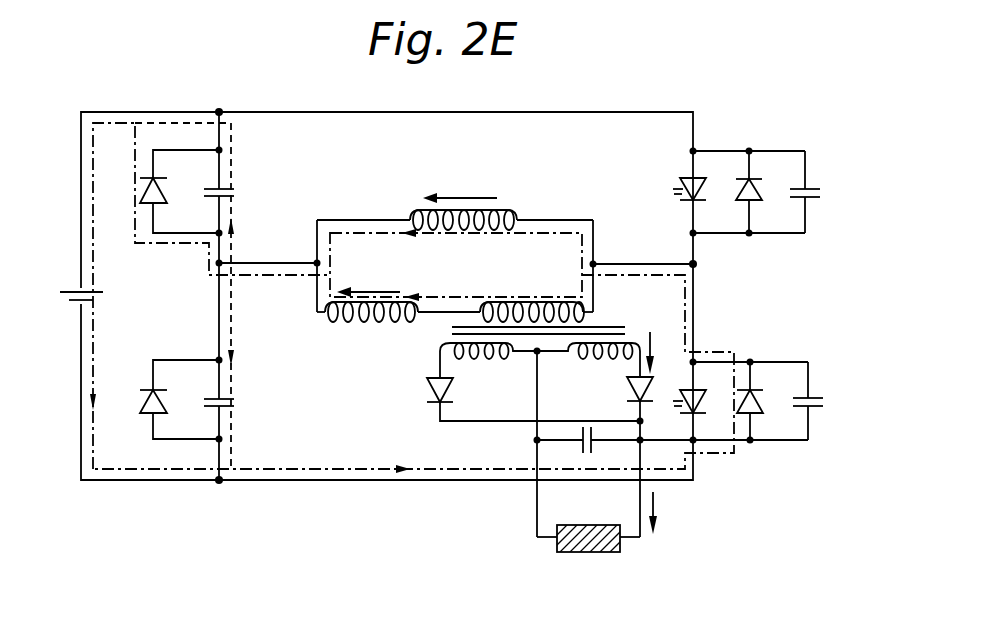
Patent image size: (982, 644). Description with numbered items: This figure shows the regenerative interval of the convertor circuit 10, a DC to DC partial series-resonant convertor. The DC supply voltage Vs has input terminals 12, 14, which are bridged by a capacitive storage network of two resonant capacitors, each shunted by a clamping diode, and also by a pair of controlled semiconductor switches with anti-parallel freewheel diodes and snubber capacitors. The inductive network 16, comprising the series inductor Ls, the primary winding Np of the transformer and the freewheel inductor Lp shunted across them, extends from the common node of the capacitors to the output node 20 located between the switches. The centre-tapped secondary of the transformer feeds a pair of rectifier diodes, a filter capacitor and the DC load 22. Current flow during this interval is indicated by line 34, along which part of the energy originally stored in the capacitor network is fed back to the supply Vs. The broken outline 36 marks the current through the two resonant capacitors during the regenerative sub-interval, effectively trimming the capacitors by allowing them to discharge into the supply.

The convertor circuit 10 is at (130, 90).
The input terminal 12 is at (220, 112).
The input terminal 14 is at (219, 480).
The inductive network 16 is at (542, 212).
The output node 20 is at (698, 264).
The DC load 22 is at (585, 552).
The current flow line 34 is at (138, 118).
The broken outline current path 36 is at (233, 165).